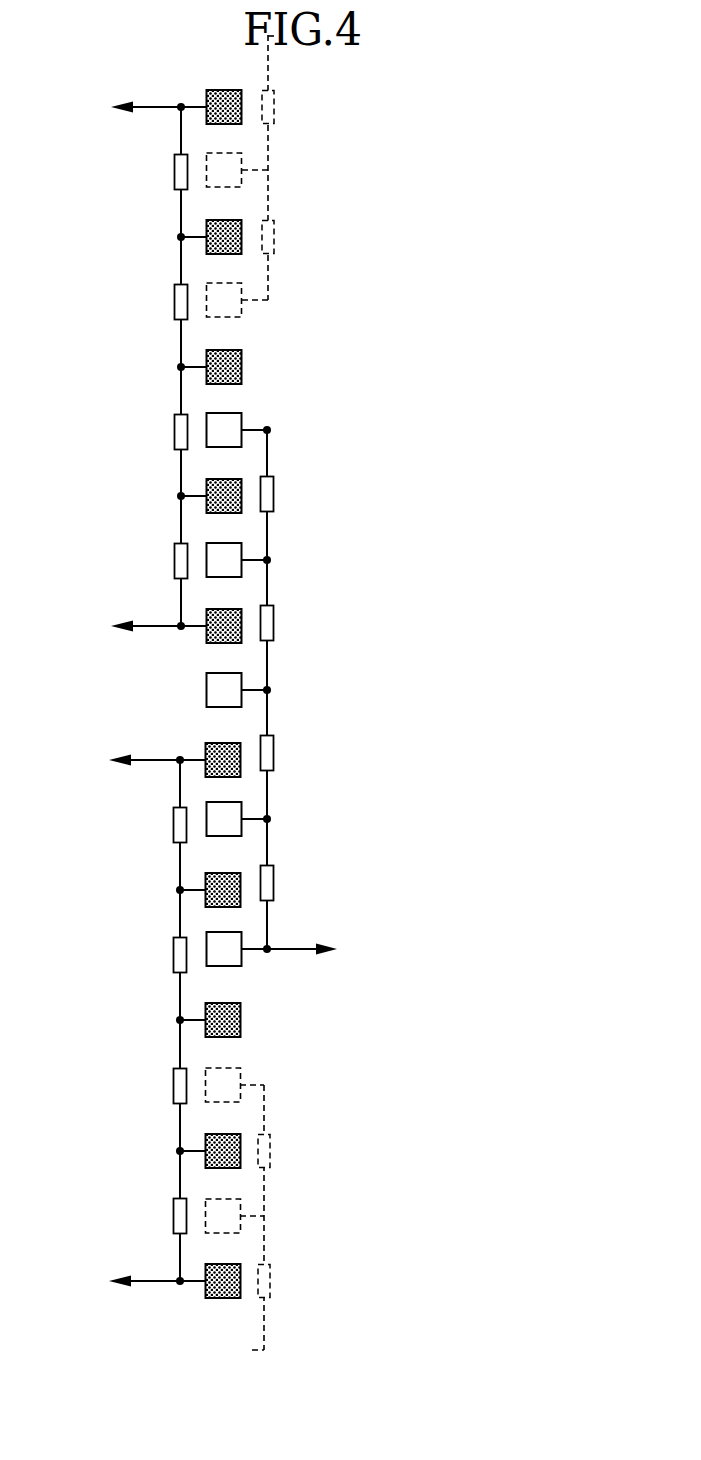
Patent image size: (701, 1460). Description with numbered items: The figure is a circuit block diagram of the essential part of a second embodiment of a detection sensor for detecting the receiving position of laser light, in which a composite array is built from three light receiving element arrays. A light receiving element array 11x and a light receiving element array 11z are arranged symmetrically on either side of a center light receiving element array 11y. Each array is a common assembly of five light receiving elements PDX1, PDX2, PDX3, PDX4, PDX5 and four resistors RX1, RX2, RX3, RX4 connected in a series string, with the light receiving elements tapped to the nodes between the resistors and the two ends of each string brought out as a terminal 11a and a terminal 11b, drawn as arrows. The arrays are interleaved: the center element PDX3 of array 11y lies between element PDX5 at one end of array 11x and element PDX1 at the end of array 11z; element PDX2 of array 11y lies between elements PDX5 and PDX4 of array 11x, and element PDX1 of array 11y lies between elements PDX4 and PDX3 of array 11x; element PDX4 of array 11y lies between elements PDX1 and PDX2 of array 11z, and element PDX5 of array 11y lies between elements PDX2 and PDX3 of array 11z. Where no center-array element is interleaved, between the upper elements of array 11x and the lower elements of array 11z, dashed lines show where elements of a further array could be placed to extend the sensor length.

The terminal 11a is at (153, 106).
The terminal 11b is at (145, 628).
The light receiving element array 11x is at (168, 381).
The light receiving element array 11y is at (283, 669).
The light receiving element array 11z is at (160, 1001).
The resistor RX1 is at (175, 174).
The resistor RX2 is at (175, 304).
The resistor RX3 is at (175, 432).
The resistor RX4 is at (175, 561).
The light receiving element PDX1 is at (242, 108).
The light receiving element PDX2 is at (242, 238).
The light receiving element PDX3 is at (242, 368).
The light receiving element PDX4 is at (242, 497).
The light receiving element PDX5 is at (242, 627).